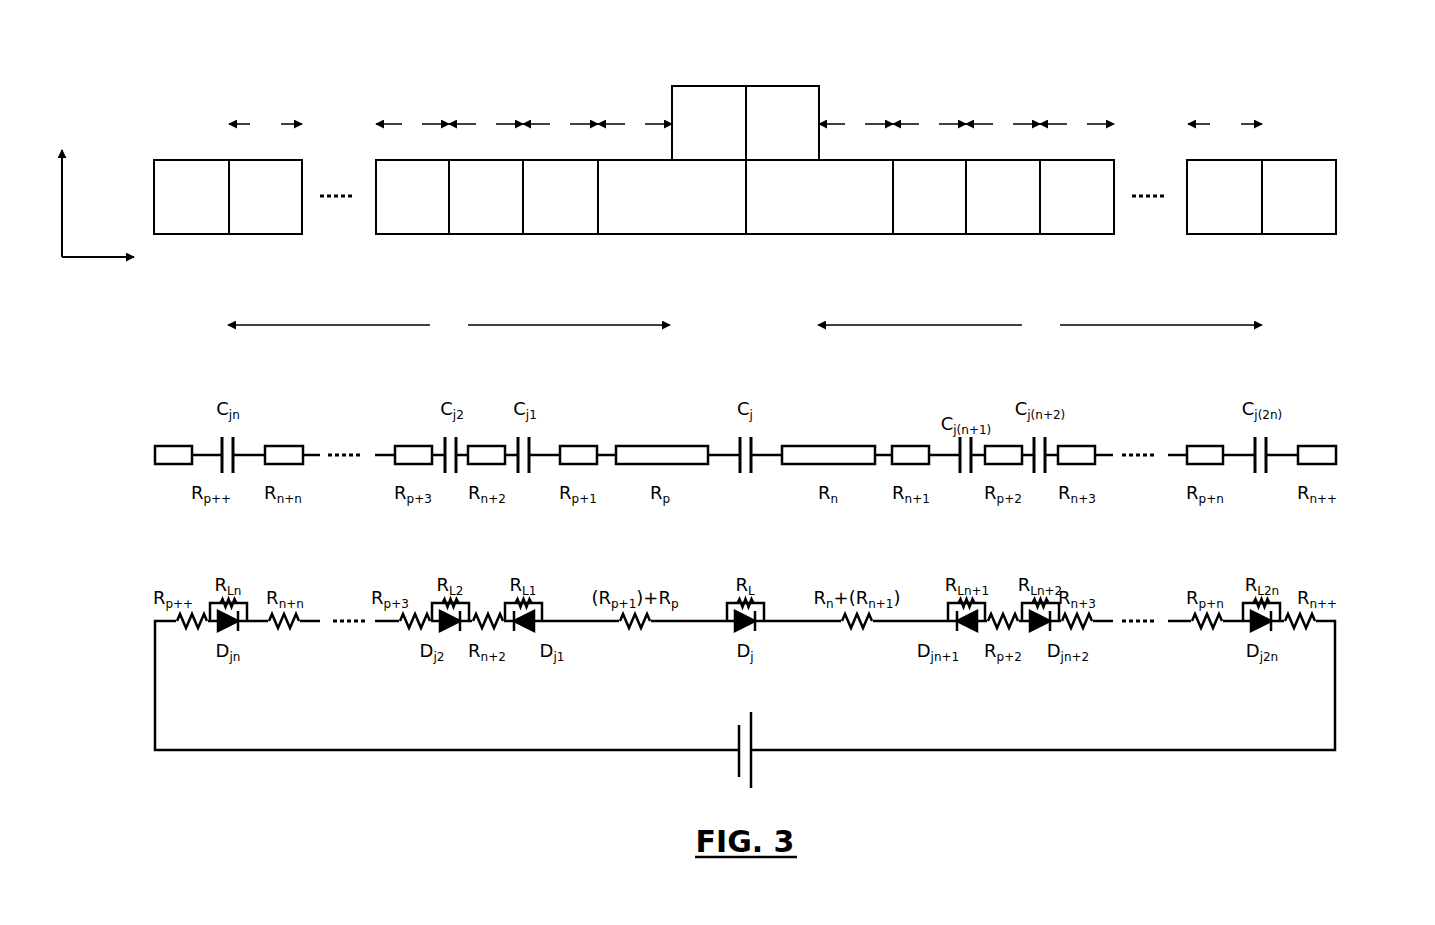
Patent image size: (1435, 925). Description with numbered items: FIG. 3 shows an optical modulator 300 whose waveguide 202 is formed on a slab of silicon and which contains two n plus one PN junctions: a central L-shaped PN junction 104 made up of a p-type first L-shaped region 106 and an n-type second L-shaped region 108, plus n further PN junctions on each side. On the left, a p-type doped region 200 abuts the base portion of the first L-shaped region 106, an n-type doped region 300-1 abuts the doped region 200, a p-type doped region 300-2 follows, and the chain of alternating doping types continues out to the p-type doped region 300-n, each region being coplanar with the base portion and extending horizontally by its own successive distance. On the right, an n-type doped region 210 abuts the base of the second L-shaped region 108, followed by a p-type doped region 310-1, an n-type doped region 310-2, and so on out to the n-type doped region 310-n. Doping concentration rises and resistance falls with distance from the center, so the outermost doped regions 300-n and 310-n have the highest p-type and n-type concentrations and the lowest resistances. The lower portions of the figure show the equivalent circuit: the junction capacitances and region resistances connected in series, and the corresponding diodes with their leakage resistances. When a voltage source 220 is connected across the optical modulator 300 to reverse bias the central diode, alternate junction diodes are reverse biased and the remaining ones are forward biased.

The L-shaped PN junction 104 is at (749, 66).
The first L-shaped region 106 is at (669, 102).
The second L-shaped region 108 is at (822, 103).
The doped region 200 is at (560, 235).
The waveguide 202 is at (1310, 227).
The doped region 210 is at (928, 235).
The voltage source 220 is at (737, 765).
The optical modulator 300 is at (744, 171).
The doped region 300-n is at (173, 235).
The doped region 300-2 is at (393, 235).
The doped region 300-1 is at (488, 235).
The doped region 310-1 is at (1003, 235).
The doped region 310-2 is at (1077, 235).
The doped region 310-n is at (1300, 235).